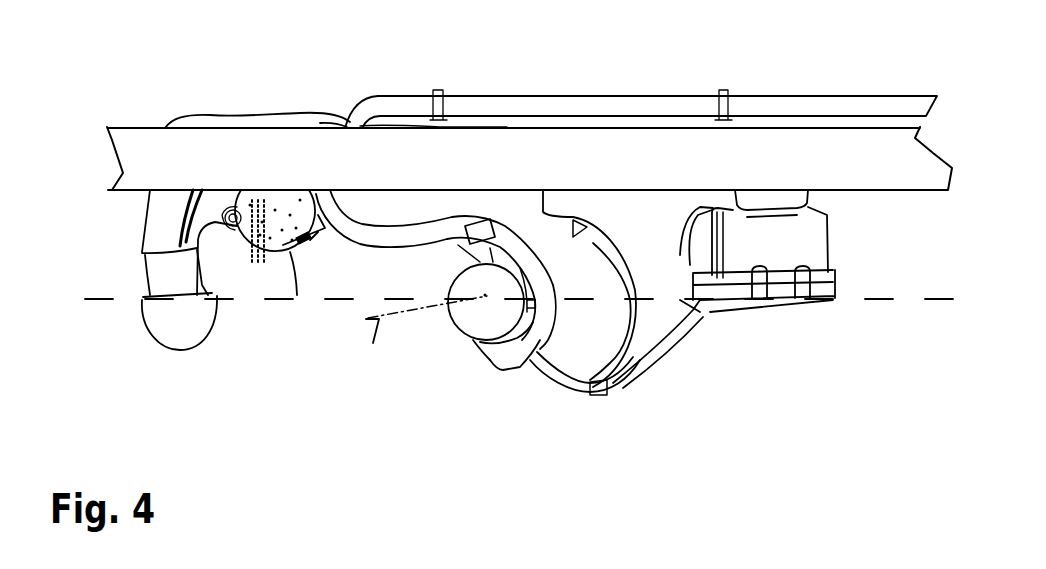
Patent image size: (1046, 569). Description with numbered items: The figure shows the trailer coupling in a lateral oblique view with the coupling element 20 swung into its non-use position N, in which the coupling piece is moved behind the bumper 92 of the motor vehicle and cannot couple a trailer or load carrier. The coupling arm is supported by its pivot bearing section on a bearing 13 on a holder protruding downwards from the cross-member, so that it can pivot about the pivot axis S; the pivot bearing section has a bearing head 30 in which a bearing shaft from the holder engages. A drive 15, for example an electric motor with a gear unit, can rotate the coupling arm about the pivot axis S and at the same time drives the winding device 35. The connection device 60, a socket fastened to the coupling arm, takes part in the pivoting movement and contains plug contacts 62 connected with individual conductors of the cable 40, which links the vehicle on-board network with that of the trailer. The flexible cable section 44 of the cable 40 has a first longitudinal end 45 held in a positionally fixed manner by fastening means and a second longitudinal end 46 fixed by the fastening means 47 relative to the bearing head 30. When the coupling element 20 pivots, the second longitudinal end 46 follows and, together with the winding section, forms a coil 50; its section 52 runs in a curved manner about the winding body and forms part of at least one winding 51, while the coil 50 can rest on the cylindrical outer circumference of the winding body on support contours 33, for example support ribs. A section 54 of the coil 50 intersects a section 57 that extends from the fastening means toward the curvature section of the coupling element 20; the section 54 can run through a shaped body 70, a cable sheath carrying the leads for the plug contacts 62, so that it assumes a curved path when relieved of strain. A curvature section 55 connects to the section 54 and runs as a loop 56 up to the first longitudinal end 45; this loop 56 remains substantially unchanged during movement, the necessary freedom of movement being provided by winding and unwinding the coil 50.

The bearing 13 is at (610, 388).
The drive 15 is at (825, 243).
The coupling element 20 is at (190, 360).
The bearing head 30 is at (608, 247).
The support contours 33 is at (520, 325).
The winding device 35 is at (444, 325).
The cable 40 is at (590, 92).
The cable section 44 is at (506, 374).
The first longitudinal end 45 is at (374, 100).
The second longitudinal end 46 is at (553, 283).
The fastening means 47 is at (530, 338).
The coil 50 is at (462, 350).
The winding 51 is at (528, 263).
The section 52 is at (491, 360).
The section 54 is at (463, 214).
The curvature section 55 is at (352, 233).
The loop 56 is at (352, 118).
The section 57 is at (468, 245).
The connection device 60 is at (292, 260).
The plug contacts 62 is at (275, 242).
The shaped body 70 is at (480, 224).
The bumper 92 is at (95, 292).
The non-use position N is at (150, 350).
The pivot axis S is at (423, 337).